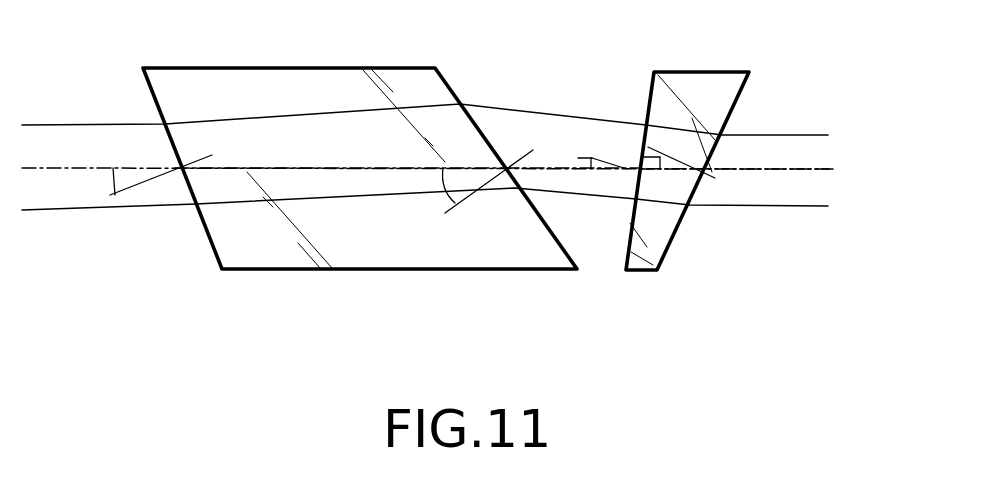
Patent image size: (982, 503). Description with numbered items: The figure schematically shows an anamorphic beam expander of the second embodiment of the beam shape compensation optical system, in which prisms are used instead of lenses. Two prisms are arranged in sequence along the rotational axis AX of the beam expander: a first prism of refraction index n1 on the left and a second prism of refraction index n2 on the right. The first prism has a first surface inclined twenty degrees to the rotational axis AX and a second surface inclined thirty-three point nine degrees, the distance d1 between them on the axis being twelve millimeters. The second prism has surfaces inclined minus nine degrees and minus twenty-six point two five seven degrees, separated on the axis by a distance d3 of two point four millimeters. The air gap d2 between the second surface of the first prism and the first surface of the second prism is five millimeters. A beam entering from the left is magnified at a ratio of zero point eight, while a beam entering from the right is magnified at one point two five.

The refraction index of first prism n1 is at (298, 92).
The refraction index of second prism n2 is at (697, 88).
The distance between first and second surfaces of first prism d1 is at (342, 168).
The distance between second surface of first prism and first surface of second prism d2 is at (567, 170).
The distance between first and second surfaces of second prism d3 is at (767, 171).
The rotational axis AX is at (452, 172).